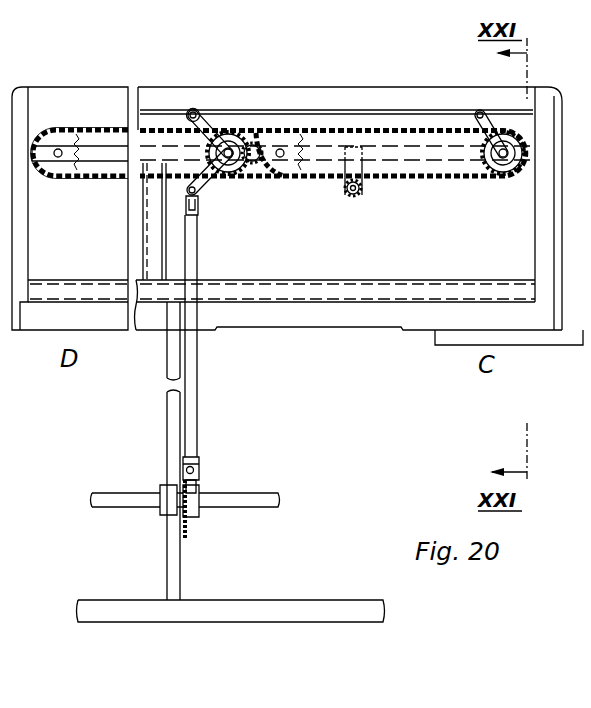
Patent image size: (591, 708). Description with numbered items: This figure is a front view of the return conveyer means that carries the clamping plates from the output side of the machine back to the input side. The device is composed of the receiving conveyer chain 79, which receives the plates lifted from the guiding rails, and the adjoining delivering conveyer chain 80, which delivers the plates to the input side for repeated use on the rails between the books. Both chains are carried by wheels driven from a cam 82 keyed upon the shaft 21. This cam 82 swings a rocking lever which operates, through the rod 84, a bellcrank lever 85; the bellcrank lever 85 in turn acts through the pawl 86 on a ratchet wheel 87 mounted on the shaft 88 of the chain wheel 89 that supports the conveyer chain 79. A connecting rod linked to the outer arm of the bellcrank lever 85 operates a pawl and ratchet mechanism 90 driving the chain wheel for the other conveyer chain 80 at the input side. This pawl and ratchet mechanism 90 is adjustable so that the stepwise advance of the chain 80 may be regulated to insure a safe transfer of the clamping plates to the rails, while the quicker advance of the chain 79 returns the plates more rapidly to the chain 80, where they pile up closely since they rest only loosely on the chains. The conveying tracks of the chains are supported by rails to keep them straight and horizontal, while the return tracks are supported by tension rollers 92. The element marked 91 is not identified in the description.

The shaft 21 is at (253, 502).
The receiving conveyer chain 79 is at (102, 128).
The delivering conveyer chain 80 is at (423, 128).
The cam 82 is at (196, 508).
The rod 84 is at (192, 441).
The bellcrank lever 85 is at (188, 115).
The pawl 86 is at (223, 132).
The ratchet wheel 87 is at (243, 171).
The shaft 88 is at (213, 165).
The chain wheel 89 is at (252, 142).
The pawl and ratchet mechanism 90 is at (512, 176).
The crank arm 91 is at (532, 135).
The tension rollers 92 is at (362, 193).